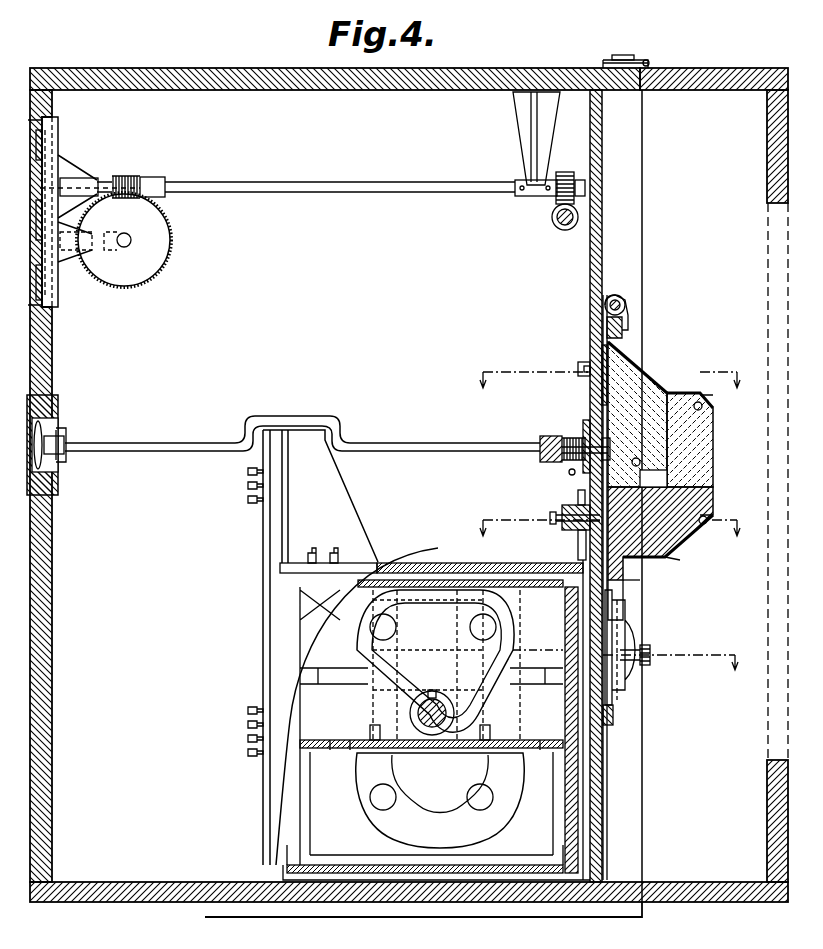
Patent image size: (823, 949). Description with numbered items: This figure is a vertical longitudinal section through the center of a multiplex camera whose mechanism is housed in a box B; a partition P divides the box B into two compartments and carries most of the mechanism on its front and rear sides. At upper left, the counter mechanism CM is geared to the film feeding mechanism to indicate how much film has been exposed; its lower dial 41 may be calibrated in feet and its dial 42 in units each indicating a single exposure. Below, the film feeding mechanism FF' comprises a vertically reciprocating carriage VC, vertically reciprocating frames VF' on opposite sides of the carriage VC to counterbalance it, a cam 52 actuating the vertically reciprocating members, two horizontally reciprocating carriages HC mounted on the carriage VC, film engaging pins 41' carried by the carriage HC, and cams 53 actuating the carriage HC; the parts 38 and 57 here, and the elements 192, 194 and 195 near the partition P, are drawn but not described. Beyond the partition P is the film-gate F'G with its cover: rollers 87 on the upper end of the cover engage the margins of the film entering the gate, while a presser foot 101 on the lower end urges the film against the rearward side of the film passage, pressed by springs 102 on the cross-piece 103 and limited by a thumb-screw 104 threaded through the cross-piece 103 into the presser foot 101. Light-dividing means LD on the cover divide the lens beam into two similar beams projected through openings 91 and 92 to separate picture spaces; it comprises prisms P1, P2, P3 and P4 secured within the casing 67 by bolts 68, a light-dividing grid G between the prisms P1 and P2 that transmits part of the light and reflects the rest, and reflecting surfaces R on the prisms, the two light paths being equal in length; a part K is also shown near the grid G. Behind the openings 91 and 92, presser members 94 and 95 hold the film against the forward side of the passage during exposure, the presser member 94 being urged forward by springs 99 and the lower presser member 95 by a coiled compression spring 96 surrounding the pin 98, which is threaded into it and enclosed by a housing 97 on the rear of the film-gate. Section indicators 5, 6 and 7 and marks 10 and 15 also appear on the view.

The box B is at (291, 68).
The counter mechanism CM is at (60, 170).
The lower dial 41 is at (342, 161).
The dial 42 is at (58, 285).
The partition P is at (603, 221).
The rollers 87 is at (622, 300).
The opening in film gate cover 91 is at (624, 338).
The film-gate F'G is at (561, 301).
The presser member 94 is at (598, 345).
The springs 99 is at (585, 370).
The prism P3 is at (648, 368).
The prism P2 is at (713, 420).
The prism P1 is at (720, 500).
The reflecting surfaces R is at (672, 382).
The bolts 68 is at (700, 402).
The section line 7 is at (610, 393).
The section line 6 is at (610, 539).
The section line 5 is at (677, 668).
The spring 195 is at (566, 440).
The gear 192 is at (586, 425).
The collar 194 is at (541, 445).
The light-dividing grid G is at (700, 472).
The pin K is at (640, 468).
The coiled compression spring 96 is at (578, 505).
The pin 98 is at (553, 512).
The housing 97 is at (565, 525).
The lower presser member 95 is at (580, 547).
The disc 38 is at (456, 562).
The light-dividing means LD is at (686, 550).
The opening in film gate cover 92 is at (633, 575).
The casing 67 is at (690, 557).
The prism P4 is at (706, 603).
The roller 57 is at (432, 590).
The film engaging pins 41' is at (439, 661).
The rod 10 is at (518, 672).
The springs 102 is at (630, 620).
The guide 15 is at (527, 638).
The cams 53 is at (436, 690).
The vertically reciprocating frames VF' is at (435, 714).
The thumb-screw 104 is at (650, 650).
The cross-piece 103 is at (640, 660).
The presser foot 101 is at (612, 694).
The film feeding mechanism FF' is at (215, 688).
The horizontally reciprocating carriages HC is at (490, 690).
The vertically reciprocating carriage VC is at (333, 750).
The cam 52 is at (505, 797).